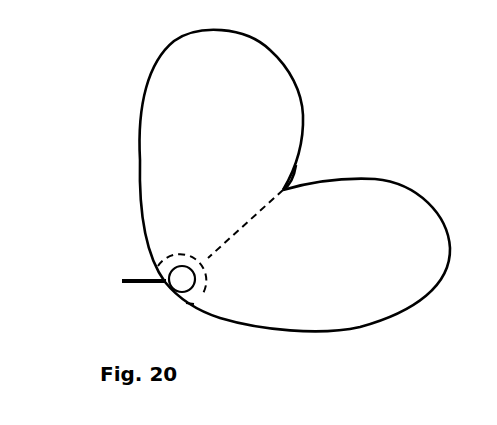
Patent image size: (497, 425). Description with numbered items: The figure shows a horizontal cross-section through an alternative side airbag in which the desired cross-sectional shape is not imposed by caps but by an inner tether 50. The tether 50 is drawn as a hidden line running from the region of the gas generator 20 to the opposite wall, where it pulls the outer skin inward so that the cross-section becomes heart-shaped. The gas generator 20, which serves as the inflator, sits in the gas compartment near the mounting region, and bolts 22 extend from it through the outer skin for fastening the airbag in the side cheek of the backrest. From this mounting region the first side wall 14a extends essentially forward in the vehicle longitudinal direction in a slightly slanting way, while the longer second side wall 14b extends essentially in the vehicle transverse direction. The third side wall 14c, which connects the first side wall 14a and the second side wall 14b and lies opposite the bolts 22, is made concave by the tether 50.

The first side wall 14a is at (138, 175).
The second side wall 14b is at (339, 328).
The third side wall 14c is at (342, 135).
The inner tether 50 is at (258, 211).
The gas generator 20 is at (184, 281).
The bolts 22 is at (135, 282).